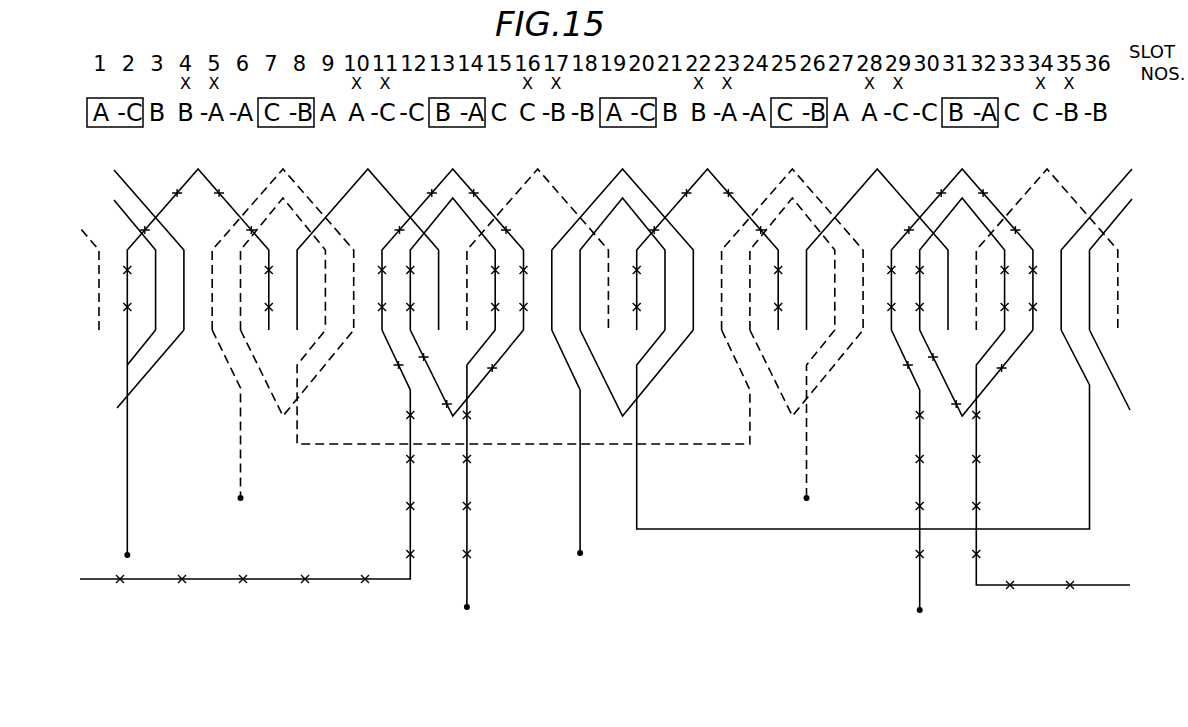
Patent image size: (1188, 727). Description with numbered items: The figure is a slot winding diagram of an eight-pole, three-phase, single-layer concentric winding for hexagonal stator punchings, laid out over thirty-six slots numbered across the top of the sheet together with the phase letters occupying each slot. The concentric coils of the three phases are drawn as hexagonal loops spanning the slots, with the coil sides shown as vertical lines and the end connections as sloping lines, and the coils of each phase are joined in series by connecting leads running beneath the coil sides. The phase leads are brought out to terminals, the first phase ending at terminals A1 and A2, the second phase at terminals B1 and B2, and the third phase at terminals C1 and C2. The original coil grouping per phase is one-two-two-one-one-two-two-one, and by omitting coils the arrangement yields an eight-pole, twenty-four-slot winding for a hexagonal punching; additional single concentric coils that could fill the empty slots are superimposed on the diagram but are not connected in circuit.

The phase A winding terminal lead A1 is at (244, 421).
The phase A winding terminal lead A2 is at (823, 421).
The phase B winding terminal lead B1 is at (584, 449).
The phase B winding terminal lead B2 is at (144, 450).
The phase C winding terminal lead C1 is at (923, 477).
The phase C winding terminal lead C2 is at (484, 476).